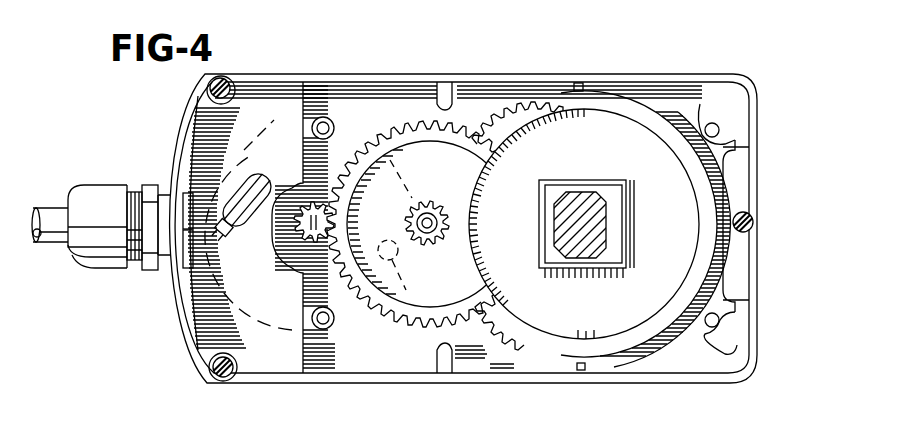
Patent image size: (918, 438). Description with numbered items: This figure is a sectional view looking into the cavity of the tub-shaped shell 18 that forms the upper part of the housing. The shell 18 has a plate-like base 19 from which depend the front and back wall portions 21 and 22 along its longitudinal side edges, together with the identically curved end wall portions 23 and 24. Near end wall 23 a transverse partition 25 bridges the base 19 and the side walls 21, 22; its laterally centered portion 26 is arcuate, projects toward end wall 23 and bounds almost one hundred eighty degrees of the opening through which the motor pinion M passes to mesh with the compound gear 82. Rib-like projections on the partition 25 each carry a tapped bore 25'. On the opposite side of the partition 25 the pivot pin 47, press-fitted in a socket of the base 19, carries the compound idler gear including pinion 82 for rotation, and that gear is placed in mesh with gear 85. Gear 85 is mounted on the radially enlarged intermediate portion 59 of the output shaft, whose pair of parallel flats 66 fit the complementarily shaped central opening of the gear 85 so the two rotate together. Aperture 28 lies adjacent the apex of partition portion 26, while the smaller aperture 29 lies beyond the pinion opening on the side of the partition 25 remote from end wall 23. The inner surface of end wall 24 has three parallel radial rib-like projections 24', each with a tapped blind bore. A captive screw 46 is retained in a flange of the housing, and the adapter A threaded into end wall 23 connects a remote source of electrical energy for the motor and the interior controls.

The shell 18 is at (479, 72).
The base 19 is at (370, 369).
The front wall portion 21 is at (598, 80).
The back wall portion 22 is at (528, 383).
The end wall portion 23 is at (178, 120).
The end wall portion 24 is at (752, 226).
The radial rib-like projections 24' is at (735, 105).
The partition 25 is at (251, 75).
The tapped bore 25' is at (338, 188).
The laterally centered portion 26 is at (272, 228).
The aperture 28 is at (262, 172).
The aperture 29 is at (399, 269).
The captive screw 46 is at (212, 367).
The pivot pin 47 is at (446, 223).
The intermediate portion of output shaft 59 is at (582, 193).
The flats 66 is at (574, 268).
The pinion 82 is at (424, 196).
The gear 85 is at (672, 259).
The adapter A is at (101, 183).
The pinion M is at (333, 218).